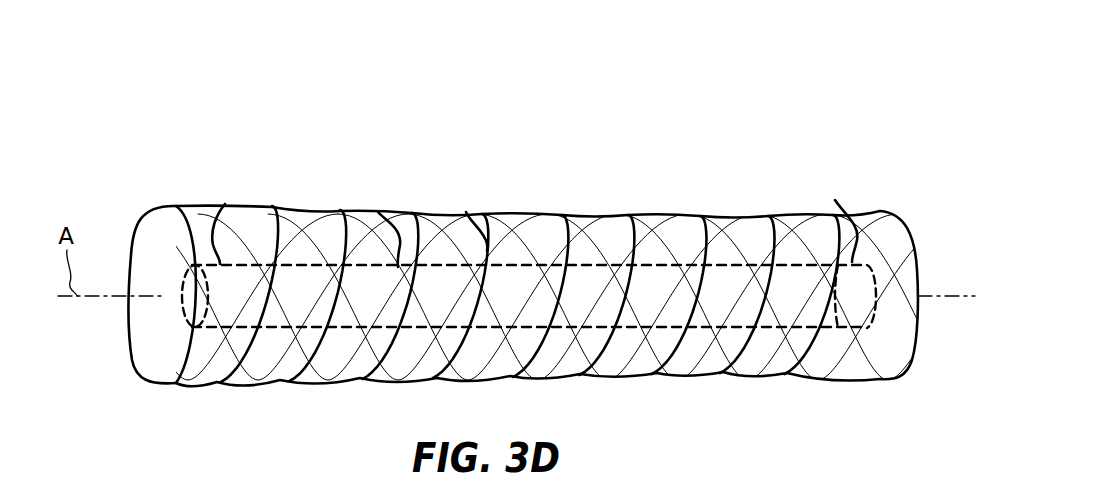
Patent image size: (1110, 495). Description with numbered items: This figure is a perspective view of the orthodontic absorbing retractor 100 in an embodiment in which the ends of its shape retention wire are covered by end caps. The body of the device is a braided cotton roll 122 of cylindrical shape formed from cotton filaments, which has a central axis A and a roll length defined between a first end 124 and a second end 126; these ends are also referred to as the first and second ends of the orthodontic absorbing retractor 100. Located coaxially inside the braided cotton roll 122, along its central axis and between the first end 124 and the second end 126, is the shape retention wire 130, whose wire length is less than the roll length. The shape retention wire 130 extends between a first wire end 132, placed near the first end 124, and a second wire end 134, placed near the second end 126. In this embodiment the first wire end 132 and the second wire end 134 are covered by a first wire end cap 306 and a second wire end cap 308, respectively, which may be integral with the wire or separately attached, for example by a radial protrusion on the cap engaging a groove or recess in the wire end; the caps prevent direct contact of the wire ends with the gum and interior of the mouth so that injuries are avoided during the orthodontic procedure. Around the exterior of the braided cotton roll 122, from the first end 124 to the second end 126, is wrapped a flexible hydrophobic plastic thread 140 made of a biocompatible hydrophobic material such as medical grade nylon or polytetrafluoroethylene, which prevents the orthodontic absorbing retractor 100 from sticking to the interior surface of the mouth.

The orthodontic absorbing retractor 100 is at (793, 88).
The braided cotton roll 122 is at (601, 219).
The first end 124 is at (137, 228).
The second end 126 is at (908, 230).
The shape retention wire 130 is at (375, 212).
The first wire end 132 is at (178, 285).
The second wire end 134 is at (884, 292).
The flexible hydrophobic plastic thread 140 is at (466, 213).
The first wire end cap 306 is at (225, 205).
The second wire end cap 308 is at (835, 200).